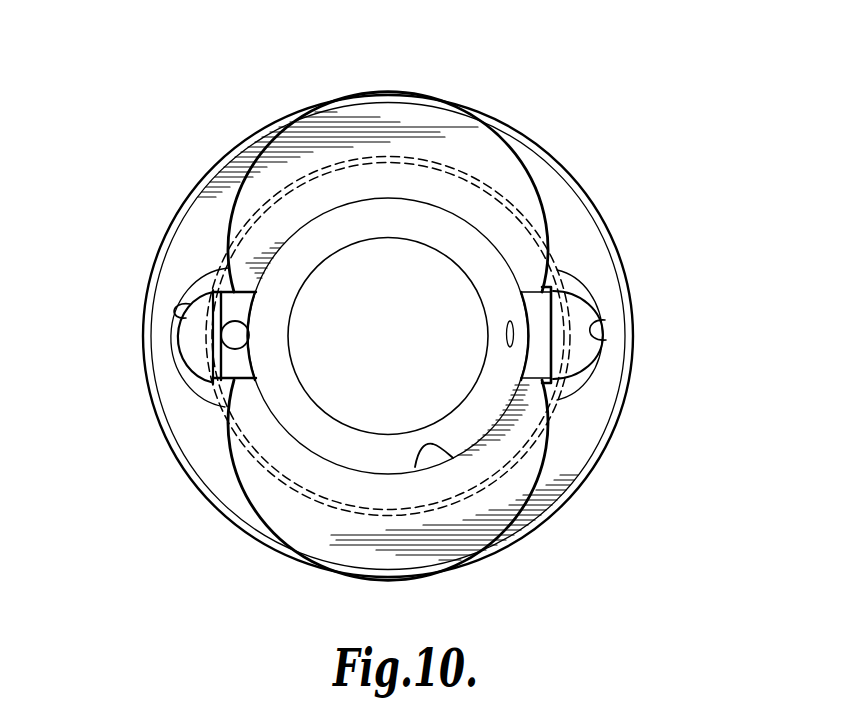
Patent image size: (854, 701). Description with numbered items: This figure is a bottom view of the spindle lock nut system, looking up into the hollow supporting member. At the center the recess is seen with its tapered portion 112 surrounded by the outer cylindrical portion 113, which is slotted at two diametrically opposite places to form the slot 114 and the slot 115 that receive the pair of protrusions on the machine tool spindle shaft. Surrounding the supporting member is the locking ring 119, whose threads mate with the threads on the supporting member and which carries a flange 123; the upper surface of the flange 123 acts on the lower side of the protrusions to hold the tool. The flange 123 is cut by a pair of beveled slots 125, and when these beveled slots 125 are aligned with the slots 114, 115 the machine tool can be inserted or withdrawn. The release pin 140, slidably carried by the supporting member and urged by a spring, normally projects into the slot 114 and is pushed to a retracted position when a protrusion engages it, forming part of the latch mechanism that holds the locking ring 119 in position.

The locking ring 119 is at (513, 124).
The flange 123 is at (453, 185).
The tapered portion 112 is at (329, 237).
The slot 114 is at (222, 360).
The slot 115 is at (533, 378).
The beveled slots 125 is at (188, 306).
The release pin 140 is at (235, 322).
The outer cylindrical portion 113 is at (421, 462).